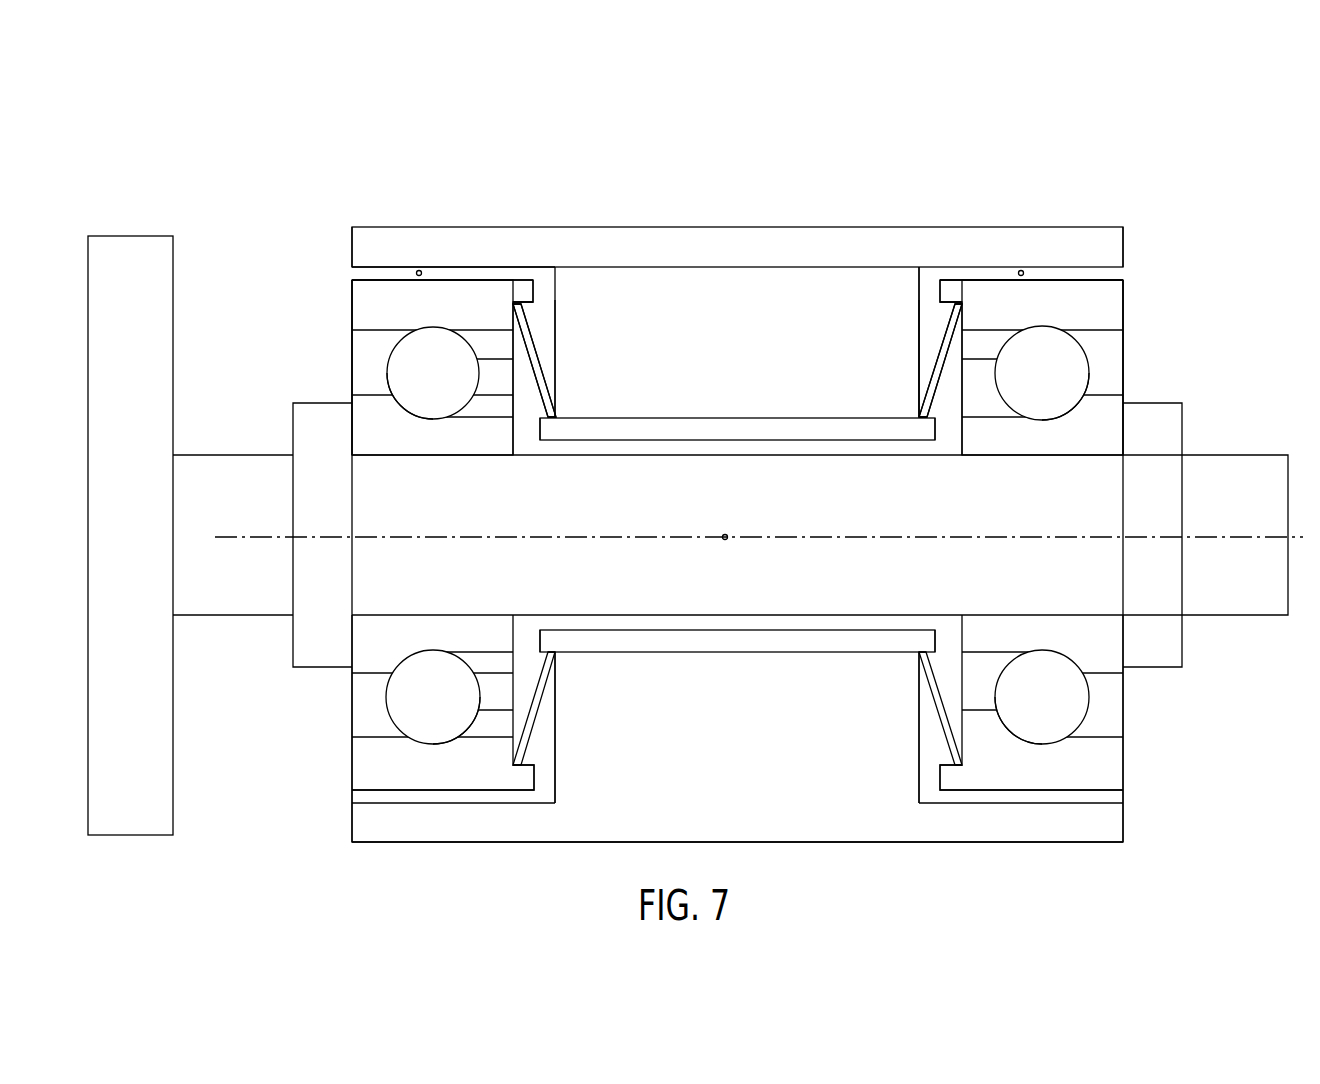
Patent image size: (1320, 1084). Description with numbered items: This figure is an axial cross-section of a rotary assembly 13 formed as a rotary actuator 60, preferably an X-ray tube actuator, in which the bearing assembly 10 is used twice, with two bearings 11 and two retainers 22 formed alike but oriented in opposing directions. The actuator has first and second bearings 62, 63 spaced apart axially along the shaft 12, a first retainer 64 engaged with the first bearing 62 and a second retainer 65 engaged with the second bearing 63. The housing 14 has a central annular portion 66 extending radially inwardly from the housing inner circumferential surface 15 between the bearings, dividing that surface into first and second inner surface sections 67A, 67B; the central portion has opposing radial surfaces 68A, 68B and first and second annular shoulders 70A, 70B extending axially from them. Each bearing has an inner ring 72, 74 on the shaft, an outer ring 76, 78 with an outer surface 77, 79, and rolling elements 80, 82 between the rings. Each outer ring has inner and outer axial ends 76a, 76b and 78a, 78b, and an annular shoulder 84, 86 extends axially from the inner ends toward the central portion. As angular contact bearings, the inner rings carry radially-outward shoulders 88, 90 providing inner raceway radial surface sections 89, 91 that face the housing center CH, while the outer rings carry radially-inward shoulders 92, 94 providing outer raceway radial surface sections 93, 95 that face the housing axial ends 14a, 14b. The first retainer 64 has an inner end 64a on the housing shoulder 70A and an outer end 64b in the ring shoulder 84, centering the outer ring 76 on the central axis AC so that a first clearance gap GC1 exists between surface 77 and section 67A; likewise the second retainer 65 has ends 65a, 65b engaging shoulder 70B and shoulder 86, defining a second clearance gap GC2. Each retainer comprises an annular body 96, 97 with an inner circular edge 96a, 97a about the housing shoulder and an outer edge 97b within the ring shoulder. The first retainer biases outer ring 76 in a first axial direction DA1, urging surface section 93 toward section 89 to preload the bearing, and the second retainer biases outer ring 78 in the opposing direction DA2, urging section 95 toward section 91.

The rotary actuator 60 is at (267, 188).
The shaft 12 is at (1242, 452).
The central axis AC is at (1258, 535).
The center of the housing CH is at (728, 537).
The first axial direction DA1 is at (750, 520).
The second axial direction DA2 is at (756, 549).
The housing 14 is at (631, 187).
The first axial end of the housing 14a is at (352, 250).
The second axial end of the housing 14b is at (1123, 248).
The rotary assembly 13 is at (1089, 187).
The bearing 11 is at (350, 300).
The bearing assembly 10 is at (596, 331).
The retainer 22 is at (558, 384).
The housing inner circumferential surface 15 is at (458, 271).
The outer ring of the first bearing 76 is at (385, 780).
The inner axial end of the first outer ring 76a is at (526, 307).
The outer axial end of the first outer ring 76b is at (352, 325).
The outer circumferential surface of the first outer ring 77 is at (381, 280).
The first annular clearance gap GC1 is at (419, 270).
The annular shoulder of the first outer ring 84 is at (527, 284).
The annular shoulder of the first inner ring 88 is at (362, 403).
The annular shoulder of the first outer ring 92 is at (487, 347).
The first bearing outer raceway radial surface section 93 is at (461, 337).
The first bearing inner raceway radial surface section 89 is at (403, 408).
The annular body of the first retainer 96 is at (548, 363).
The inner circular edge of the first retainer 96a is at (514, 306).
The central annular portion of the housing 66 is at (735, 650).
The first annular shoulder of the housing 70A is at (548, 630).
The second annular shoulder of the housing 70B is at (921, 630).
The outer ring of the second bearing 78 is at (1083, 778).
The inner axial end of the second outer ring 78a is at (965, 328).
The outer axial end of the second outer ring 78b is at (1123, 322).
The outer surface of the second outer ring 79 is at (1087, 280).
The second annular clearance gap GC2 is at (1021, 270).
The annular shoulder of the second outer ring 86 is at (950, 285).
The annular shoulder of the second inner ring 90 is at (1093, 405).
The annular shoulder of the second outer ring 94 is at (987, 350).
The second bearing outer raceway radial surface section 95 is at (1005, 336).
The second bearing inner raceway radial surface section 91 is at (1075, 405).
The annular body of the second retainer 97 is at (935, 358).
The inner circular edge of the second retainer 97a is at (920, 418).
The outer circular edge of the second retainer 97b is at (958, 308).
The first bearing 62 is at (350, 756).
The first inner surface section 67A is at (440, 800).
The inner ring of the first bearing 72 is at (448, 630).
The rolling elements of the first bearing 80 is at (455, 715).
The first retainer 64 is at (554, 708).
The first, inner end of the first retainer 64a is at (558, 656).
The second, outer end of the first retainer 64b is at (532, 758).
The first radial surface of the housing central portion 68A is at (549, 735).
The second bearing 63 is at (1123, 755).
The second inner surface section 67B is at (980, 800).
The inner ring of the second bearing 74 is at (1070, 625).
The rolling elements of the second bearing 82 is at (1035, 725).
The second retainer 65 is at (917, 706).
The first, inner end of the second retainer 65a is at (920, 655).
The second, outer end of the second retainer 65b is at (948, 760).
The second radial surface of the housing central portion 68B is at (921, 733).